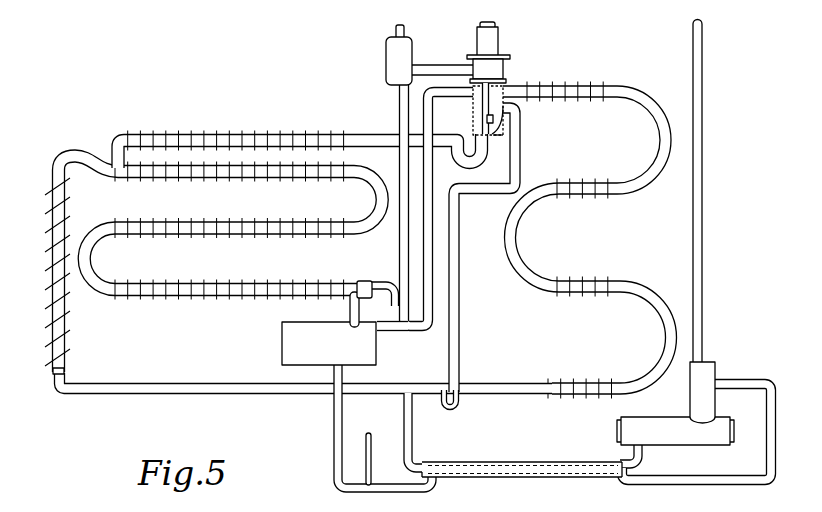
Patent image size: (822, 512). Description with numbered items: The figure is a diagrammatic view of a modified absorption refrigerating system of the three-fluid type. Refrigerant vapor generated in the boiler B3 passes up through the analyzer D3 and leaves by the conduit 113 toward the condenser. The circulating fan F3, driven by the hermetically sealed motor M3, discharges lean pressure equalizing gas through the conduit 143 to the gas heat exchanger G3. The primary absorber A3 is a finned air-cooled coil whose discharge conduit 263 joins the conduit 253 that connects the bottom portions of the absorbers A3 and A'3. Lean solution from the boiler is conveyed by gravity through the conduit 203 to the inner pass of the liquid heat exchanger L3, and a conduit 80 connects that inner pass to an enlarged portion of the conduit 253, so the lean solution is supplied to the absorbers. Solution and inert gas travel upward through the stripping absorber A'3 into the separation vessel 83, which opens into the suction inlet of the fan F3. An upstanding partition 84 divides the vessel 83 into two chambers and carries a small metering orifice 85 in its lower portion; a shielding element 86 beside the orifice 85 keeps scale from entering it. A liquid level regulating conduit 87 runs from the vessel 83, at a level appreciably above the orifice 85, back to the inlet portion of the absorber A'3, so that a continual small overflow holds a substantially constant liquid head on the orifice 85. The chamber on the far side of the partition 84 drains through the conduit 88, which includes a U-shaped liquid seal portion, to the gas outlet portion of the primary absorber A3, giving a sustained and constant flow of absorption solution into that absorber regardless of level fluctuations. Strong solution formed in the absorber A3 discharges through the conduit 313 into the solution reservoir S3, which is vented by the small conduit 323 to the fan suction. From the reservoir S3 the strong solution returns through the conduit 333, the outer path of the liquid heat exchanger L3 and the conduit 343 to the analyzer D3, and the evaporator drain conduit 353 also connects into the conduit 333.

The conduit 88 is at (247, 134).
The finned air-cooled discharge conduit 263 is at (48, 270).
The circulating fan discharge conduit 143 is at (430, 46).
The separation vessel 83 is at (473, 104).
The upstanding partition 84 is at (490, 107).
The metering orifice 85 is at (487, 124).
The shielding element 86 is at (497, 136).
The liquid level regulating conduit 87 is at (524, 154).
The refrigerant vapor conduit 113 is at (702, 233).
The strong solution conduit 313 is at (360, 307).
The vent conduit 323 is at (392, 332).
The solution conduit 253 is at (186, 371).
The strong solution return conduit 333 is at (335, 458).
The evaporator drain conduit 353 is at (364, 432).
The conduit 80 is at (412, 428).
The weak solution conduit 203 is at (644, 458).
The conduit 343 is at (766, 457).
The gas heat exchanger G3 is at (395, 62).
The electrical motor M3 is at (492, 40).
The circulating fan F3 is at (498, 72).
The primary absorber A3 is at (163, 290).
The stripping absorber A'3 is at (587, 240).
The solution reservoir S3 is at (299, 352).
The liquid heat exchanger L3 is at (521, 461).
The boiler B3 is at (633, 430).
The analyzer D3 is at (708, 368).